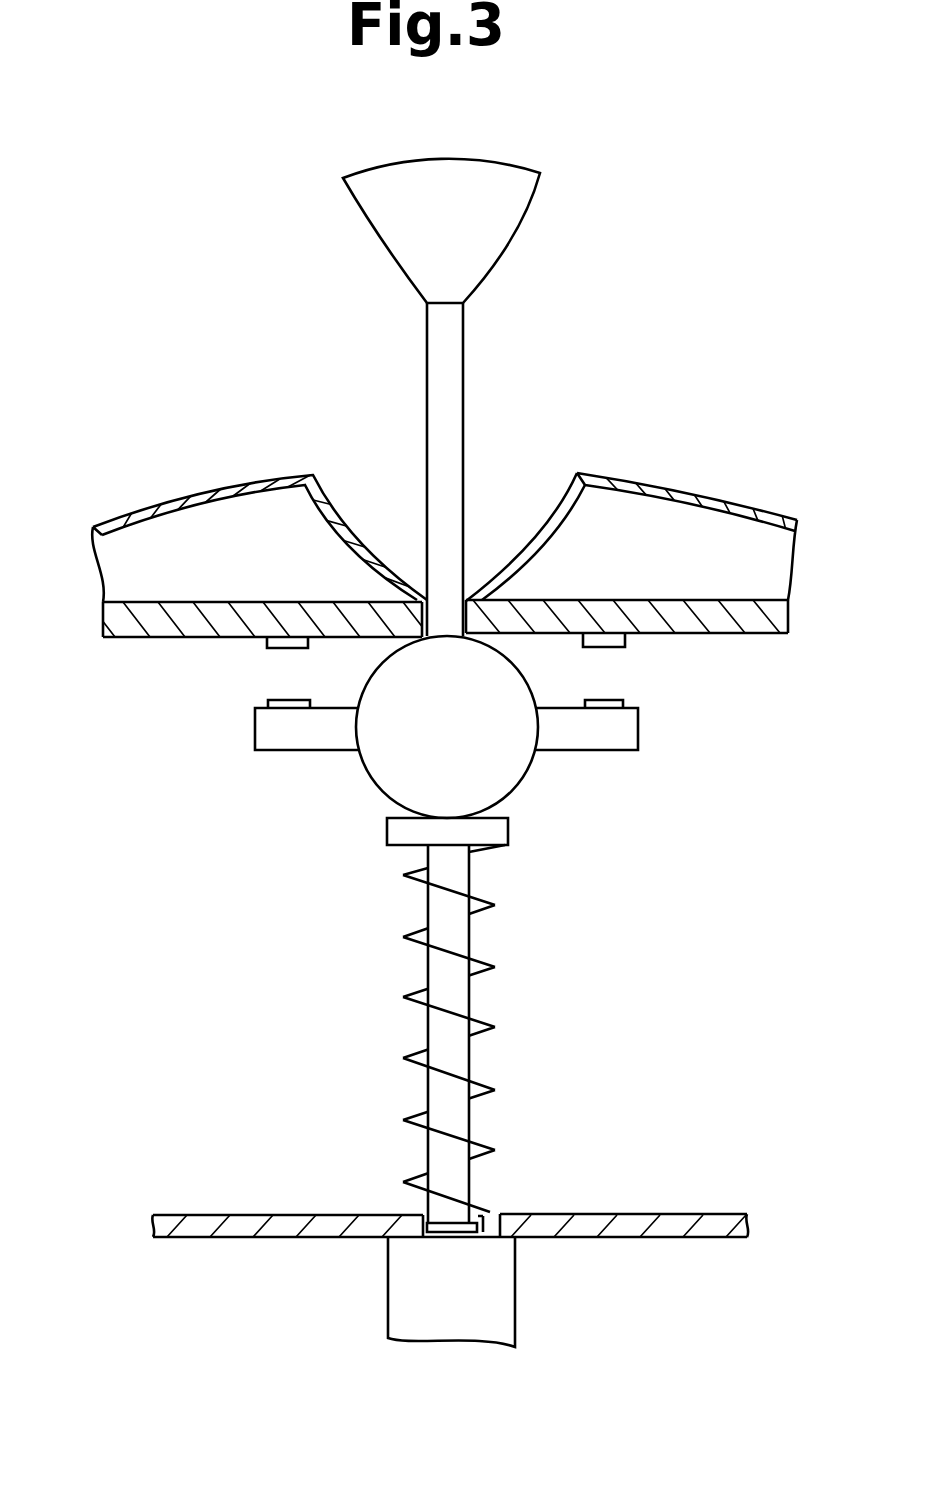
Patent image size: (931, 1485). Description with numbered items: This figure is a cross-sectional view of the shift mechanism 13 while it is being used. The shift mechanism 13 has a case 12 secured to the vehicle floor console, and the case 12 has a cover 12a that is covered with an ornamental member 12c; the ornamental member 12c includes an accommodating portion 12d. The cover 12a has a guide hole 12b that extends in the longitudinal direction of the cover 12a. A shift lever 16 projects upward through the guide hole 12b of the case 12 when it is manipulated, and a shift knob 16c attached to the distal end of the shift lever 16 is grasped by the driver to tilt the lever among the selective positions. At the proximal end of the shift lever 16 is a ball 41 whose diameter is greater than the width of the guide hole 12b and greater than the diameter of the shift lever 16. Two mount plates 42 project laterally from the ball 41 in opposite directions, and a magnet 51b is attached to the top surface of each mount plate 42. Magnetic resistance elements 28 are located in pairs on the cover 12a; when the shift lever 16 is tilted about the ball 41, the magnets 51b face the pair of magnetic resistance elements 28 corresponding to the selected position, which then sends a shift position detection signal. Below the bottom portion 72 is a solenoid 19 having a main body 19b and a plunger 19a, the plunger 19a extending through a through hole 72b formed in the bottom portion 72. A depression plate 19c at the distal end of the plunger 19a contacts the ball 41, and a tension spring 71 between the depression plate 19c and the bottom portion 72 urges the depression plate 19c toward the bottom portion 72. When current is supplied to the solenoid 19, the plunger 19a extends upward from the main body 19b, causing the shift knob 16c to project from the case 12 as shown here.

The shift mechanism 13 is at (212, 242).
The shift lever 16 is at (467, 372).
The shift knob 16c is at (500, 242).
The case 12 is at (695, 486).
The cover 12a is at (760, 627).
The guide hole 12b is at (428, 592).
The ornamental member 12c is at (233, 492).
The accommodating portion 12d is at (515, 565).
The magnetic resistance elements 28 is at (268, 645).
The ball 41 is at (380, 777).
The mount plates 42 is at (258, 728).
The magnet 51b is at (268, 703).
The solenoid 19 is at (517, 1288).
The plunger 19a is at (465, 993).
The main body 19b is at (397, 1317).
The depression plate 19c is at (507, 832).
The tension spring 71 is at (485, 895).
The bottom portion 72 is at (703, 1228).
The through hole 72b is at (428, 1210).